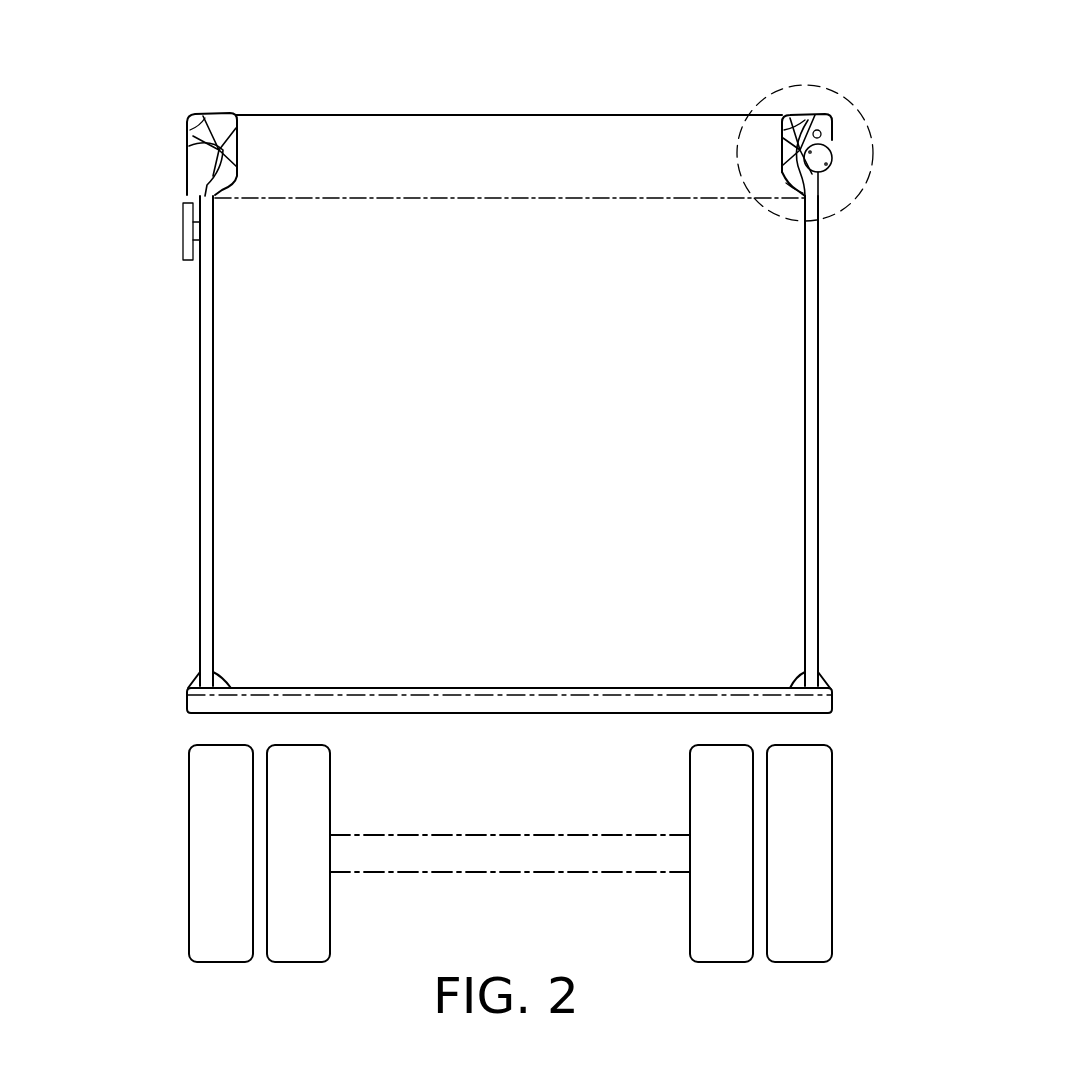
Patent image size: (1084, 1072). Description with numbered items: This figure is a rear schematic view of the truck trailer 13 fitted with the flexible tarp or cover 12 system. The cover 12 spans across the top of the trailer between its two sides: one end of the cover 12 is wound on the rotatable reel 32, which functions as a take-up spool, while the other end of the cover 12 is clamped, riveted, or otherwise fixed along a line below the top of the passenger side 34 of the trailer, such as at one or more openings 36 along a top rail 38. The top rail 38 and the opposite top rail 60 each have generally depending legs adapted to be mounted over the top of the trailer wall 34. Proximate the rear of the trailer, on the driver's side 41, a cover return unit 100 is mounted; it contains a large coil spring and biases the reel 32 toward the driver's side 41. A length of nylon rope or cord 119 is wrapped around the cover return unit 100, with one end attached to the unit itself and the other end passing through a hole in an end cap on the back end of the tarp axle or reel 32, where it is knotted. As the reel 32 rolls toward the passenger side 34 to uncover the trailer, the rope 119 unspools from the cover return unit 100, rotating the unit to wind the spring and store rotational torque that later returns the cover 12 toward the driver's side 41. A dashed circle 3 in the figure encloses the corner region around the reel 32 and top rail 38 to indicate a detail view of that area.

The rope 119 is at (445, 115).
The opposite top rail 60 is at (182, 128).
The cover return unit 100 is at (187, 263).
The driver's side 41 is at (200, 440).
The side of the trailer 34 is at (820, 466).
The cover 12 is at (829, 177).
The openings 36 is at (803, 143).
The reel 32 is at (822, 165).
The detail view circle 3 is at (873, 162).
The top rail 38 is at (780, 187).
The truck trailer 13 is at (818, 549).